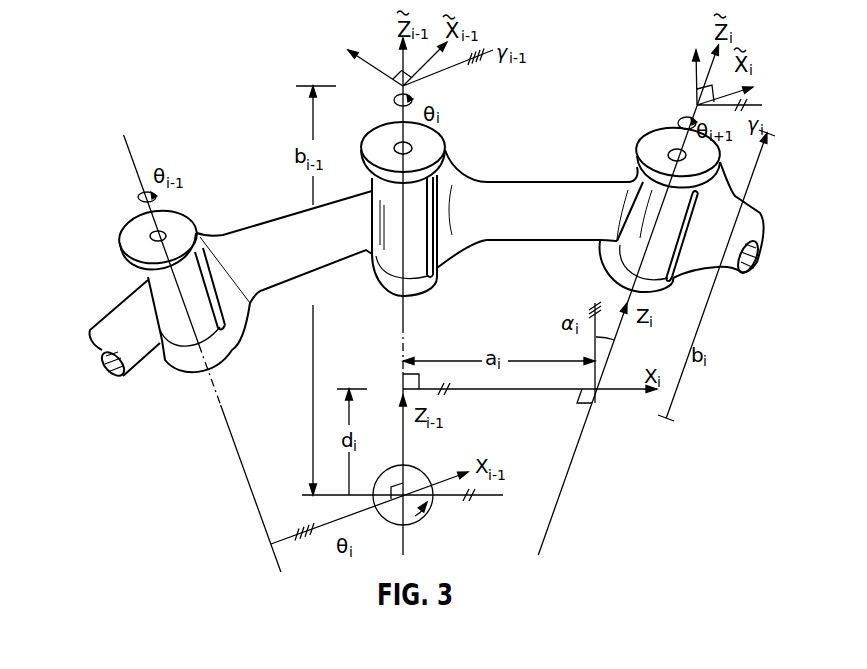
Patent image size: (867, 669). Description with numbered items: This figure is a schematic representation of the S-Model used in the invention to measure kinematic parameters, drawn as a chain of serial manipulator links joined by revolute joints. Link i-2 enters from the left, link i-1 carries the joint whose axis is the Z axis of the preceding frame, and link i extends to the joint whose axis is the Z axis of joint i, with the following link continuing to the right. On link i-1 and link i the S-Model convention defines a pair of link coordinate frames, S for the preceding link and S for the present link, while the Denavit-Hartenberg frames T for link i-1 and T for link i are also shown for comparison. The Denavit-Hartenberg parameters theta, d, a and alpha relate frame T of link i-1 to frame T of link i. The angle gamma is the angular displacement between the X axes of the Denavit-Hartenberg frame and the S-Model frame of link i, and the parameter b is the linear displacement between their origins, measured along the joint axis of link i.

The link i-2 is at (128, 301).
The coordinate frame T_{i-1} / link coordinate frame S_{i-1} i-1 is at (291, 223).
The coordinate frame T_i / link coordinate frame S_ i is at (576, 193).